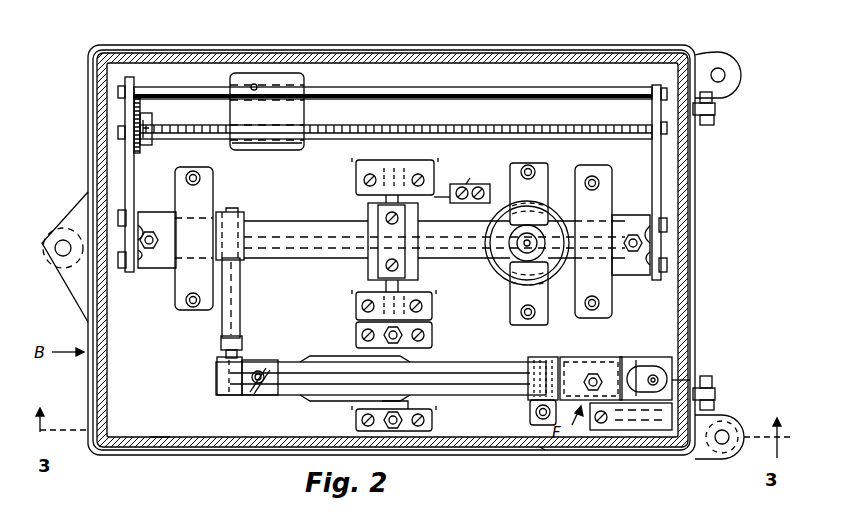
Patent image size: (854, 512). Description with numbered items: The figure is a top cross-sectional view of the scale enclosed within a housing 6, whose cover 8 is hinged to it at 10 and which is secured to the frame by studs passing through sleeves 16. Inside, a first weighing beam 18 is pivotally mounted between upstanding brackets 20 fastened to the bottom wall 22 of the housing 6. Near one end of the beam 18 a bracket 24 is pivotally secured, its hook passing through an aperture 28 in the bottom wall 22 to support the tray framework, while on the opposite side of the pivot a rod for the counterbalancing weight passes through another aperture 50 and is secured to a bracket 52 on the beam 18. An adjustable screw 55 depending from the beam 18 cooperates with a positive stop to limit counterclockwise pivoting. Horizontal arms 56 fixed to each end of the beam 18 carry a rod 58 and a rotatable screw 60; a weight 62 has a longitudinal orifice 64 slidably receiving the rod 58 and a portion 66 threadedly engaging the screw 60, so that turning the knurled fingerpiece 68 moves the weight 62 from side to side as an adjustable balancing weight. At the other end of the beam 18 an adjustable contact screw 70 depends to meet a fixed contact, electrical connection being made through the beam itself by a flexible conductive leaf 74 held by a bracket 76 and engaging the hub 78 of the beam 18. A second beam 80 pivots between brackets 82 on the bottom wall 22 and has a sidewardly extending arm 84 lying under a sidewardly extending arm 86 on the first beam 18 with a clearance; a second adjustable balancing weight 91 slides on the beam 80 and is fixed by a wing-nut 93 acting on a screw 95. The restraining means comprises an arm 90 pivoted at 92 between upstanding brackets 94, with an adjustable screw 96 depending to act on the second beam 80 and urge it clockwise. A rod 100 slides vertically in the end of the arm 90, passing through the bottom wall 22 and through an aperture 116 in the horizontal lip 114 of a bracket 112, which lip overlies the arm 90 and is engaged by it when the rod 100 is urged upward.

The housing 6 is at (483, 455).
The cover 8 is at (542, 455).
The hinge 10 is at (713, 120).
The sleeves 16 is at (70, 210).
The first weighing beam 18 is at (295, 222).
The upstanding brackets 20 is at (422, 172).
The bottom wall 22 is at (163, 440).
The bracket 24 is at (185, 288).
The aperture 28 is at (178, 265).
The aperture 50 is at (618, 275).
The bracket 52 is at (608, 178).
The adjustable screw 55 is at (150, 230).
The horizontal arms 56 is at (128, 172).
The rod 58 is at (482, 92).
The rotatable screw 60 is at (508, 128).
The weight 62 is at (292, 73).
The longitudinal orifice 64 is at (255, 85).
The portion 66 is at (268, 150).
The knurled fingerpiece 68 is at (134, 120).
The adjustable contact screw 70 is at (632, 228).
The flexible conductive leaf 74 is at (438, 198).
The bracket 76 is at (470, 182).
The hub 78 is at (368, 210).
The second beam 80 is at (467, 378).
The brackets 82 is at (428, 336).
The sidewardly extending arm 84 is at (246, 352).
The sidewardly extending arm 86 is at (242, 289).
The arm 90 is at (557, 292).
The second adjustable balancing weight 91 is at (263, 397).
The pivot 92 is at (538, 356).
The wing-nut 93 is at (252, 397).
The upstanding brackets 94 is at (530, 410).
The screw 95 is at (248, 378).
The adjustable screw 96 is at (590, 368).
The rod 100 is at (660, 378).
The bracket 112 is at (680, 376).
The horizontal lip 114 is at (637, 360).
The aperture 116 is at (652, 388).